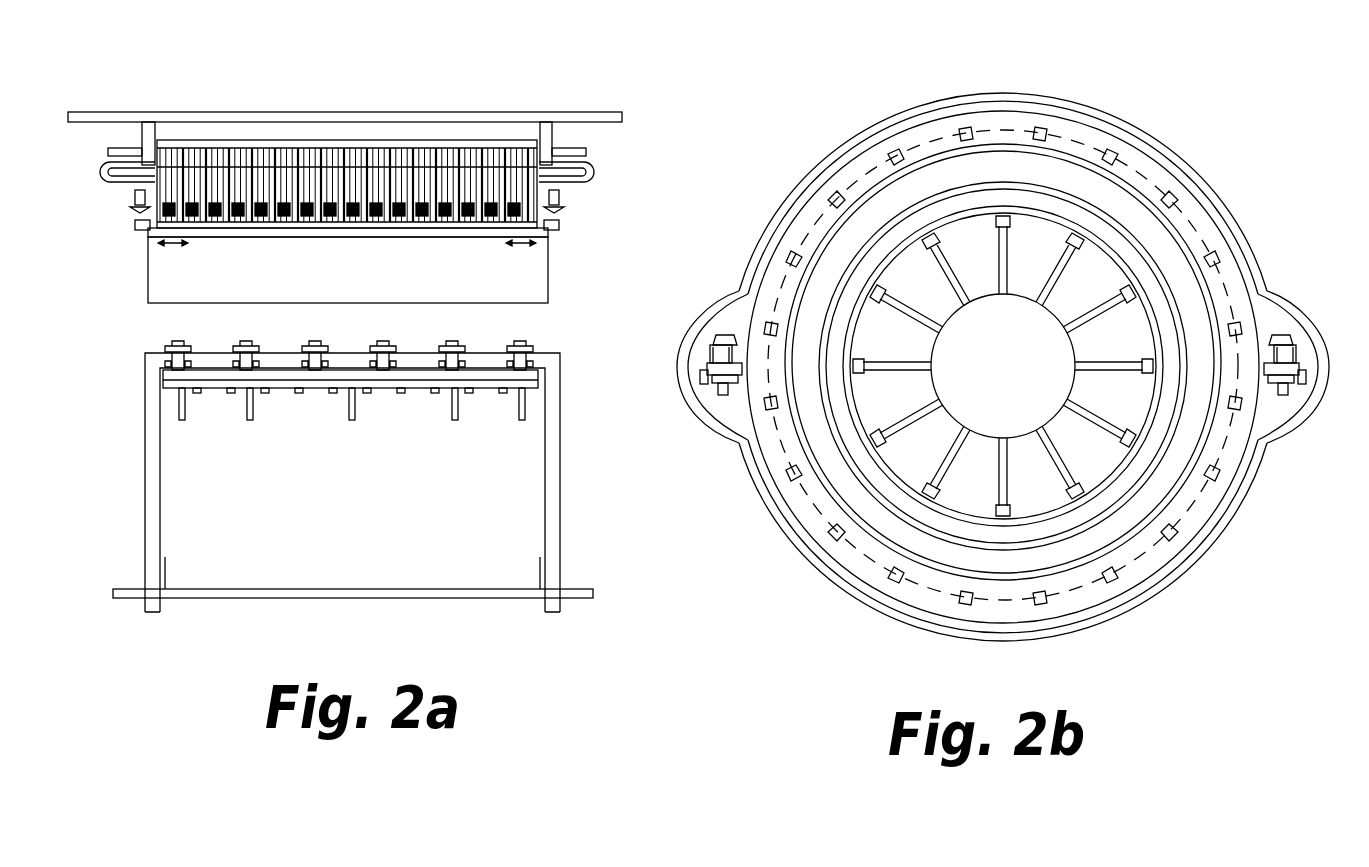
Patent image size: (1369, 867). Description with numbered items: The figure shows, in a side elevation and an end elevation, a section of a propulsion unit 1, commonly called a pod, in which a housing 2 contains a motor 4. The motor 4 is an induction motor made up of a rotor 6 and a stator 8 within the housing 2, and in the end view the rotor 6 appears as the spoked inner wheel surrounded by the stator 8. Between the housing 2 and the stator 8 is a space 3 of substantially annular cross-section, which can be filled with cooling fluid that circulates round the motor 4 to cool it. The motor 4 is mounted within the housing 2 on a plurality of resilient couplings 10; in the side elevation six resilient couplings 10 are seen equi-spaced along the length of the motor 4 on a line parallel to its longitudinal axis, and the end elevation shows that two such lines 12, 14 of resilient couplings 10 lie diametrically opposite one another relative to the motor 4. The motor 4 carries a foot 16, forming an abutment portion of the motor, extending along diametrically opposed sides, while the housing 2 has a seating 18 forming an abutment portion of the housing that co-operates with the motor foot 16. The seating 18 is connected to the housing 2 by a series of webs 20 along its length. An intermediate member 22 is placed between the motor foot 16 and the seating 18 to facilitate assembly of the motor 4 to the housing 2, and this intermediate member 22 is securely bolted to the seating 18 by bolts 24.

In FIG. 2b, the propulsion unit 1 is at (1088, 90).
In FIG. 2a, the housing 2 is at (565, 120).
In FIG. 2b, the housing 2 is at (1150, 140).
In FIG. 2a, the space 3 is at (345, 130).
In FIG. 2b, the space 3 is at (826, 565).
In FIG. 2b, the motor 4 is at (1116, 206).
In FIG. 2a, the rotor 6 is at (500, 205).
In FIG. 2b, the rotor 6 is at (1125, 262).
In FIG. 2a, the stator 8 is at (515, 160).
In FIG. 2b, the stator 8 is at (1190, 290).
In FIG. 2a, the resilient couplings 10 is at (505, 392).
In FIG. 2b, the resilient couplings 10 is at (718, 334).
In FIG. 2b, the line of resilient couplings 12 is at (733, 330).
In FIG. 2b, the line of resilient couplings 14 is at (1283, 432).
In FIG. 2a, the motor foot 16 is at (175, 318).
In FIG. 2b, the motor foot 16 is at (745, 396).
In FIG. 2a, the seating 18 is at (190, 386).
In FIG. 2b, the seating 18 is at (708, 374).
In FIG. 2a, the webs 20 is at (262, 424).
In FIG. 2b, the webs 20 is at (724, 398).
In FIG. 2a, the intermediate member 22 is at (178, 378).
In FIG. 2b, the intermediate member 22 is at (718, 362).
In FIG. 2a, the bolts 24 is at (200, 388).
In FIG. 2b, the bolts 24 is at (718, 382).